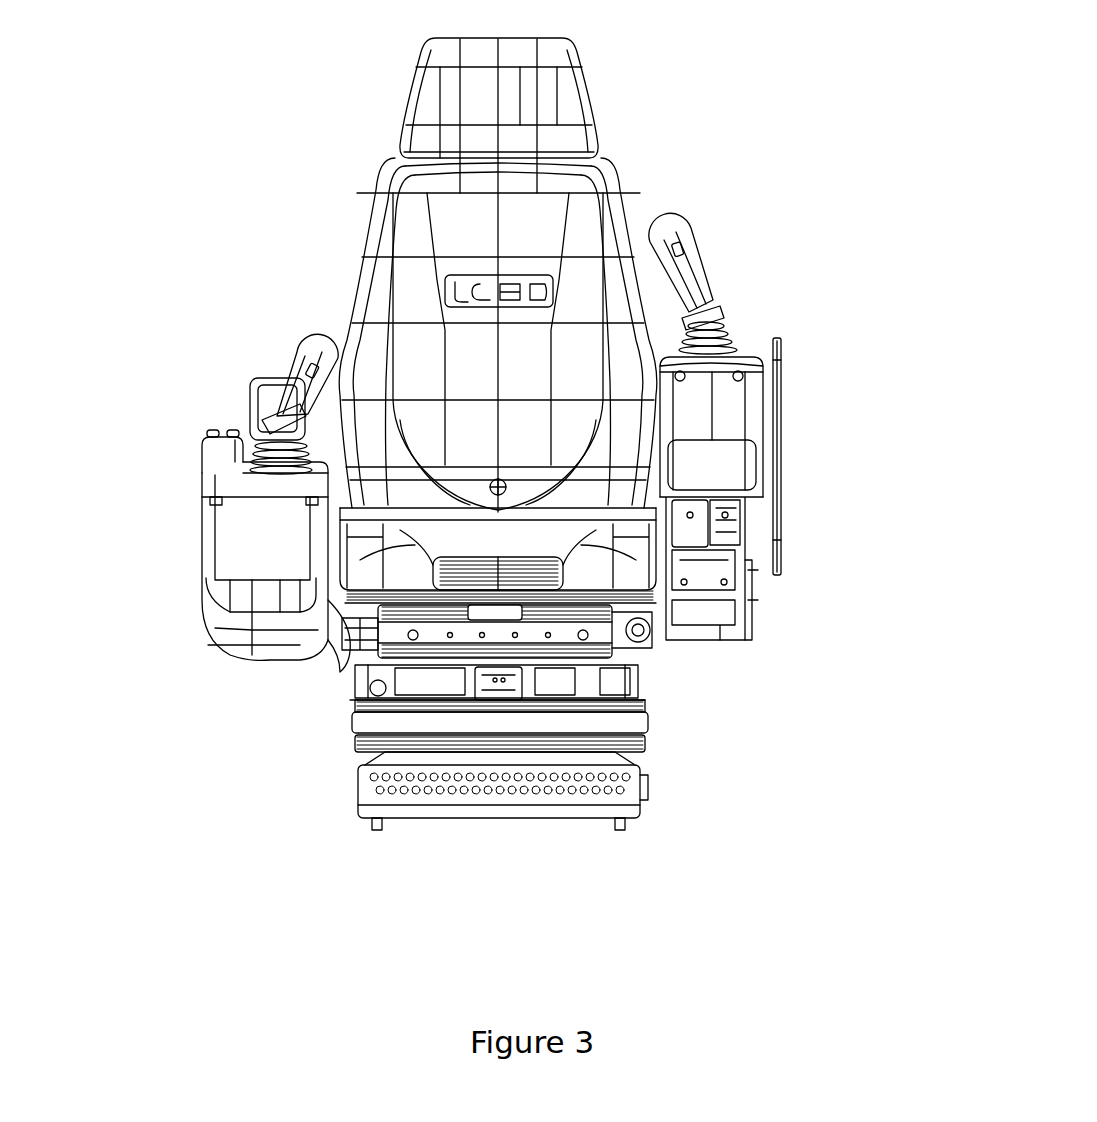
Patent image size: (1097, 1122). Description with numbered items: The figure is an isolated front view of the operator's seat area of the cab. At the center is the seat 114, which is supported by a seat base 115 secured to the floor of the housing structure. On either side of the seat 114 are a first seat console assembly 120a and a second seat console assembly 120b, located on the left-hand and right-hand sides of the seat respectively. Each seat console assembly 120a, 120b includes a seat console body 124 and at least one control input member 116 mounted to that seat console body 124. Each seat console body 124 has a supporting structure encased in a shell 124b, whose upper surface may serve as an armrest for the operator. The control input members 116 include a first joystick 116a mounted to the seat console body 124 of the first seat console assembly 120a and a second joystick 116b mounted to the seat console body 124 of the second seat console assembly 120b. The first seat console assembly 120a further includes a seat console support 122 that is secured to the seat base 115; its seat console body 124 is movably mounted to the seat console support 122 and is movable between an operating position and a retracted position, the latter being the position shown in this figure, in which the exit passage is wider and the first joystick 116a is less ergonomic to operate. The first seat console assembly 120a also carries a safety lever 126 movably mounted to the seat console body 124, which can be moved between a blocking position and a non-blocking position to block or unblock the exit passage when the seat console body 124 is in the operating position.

The seat 114 is at (568, 240).
The seat base 115 is at (577, 708).
The control input member 116 is at (545, 241).
The first joystick 116a is at (683, 237).
The second joystick 116b is at (305, 350).
The first seat console assembly 120a is at (780, 595).
The second seat console assembly 120b is at (200, 670).
The seat console support 122 is at (690, 635).
The seat console body 124 is at (240, 543).
The shell 124b is at (705, 538).
The safety lever 126 is at (780, 358).